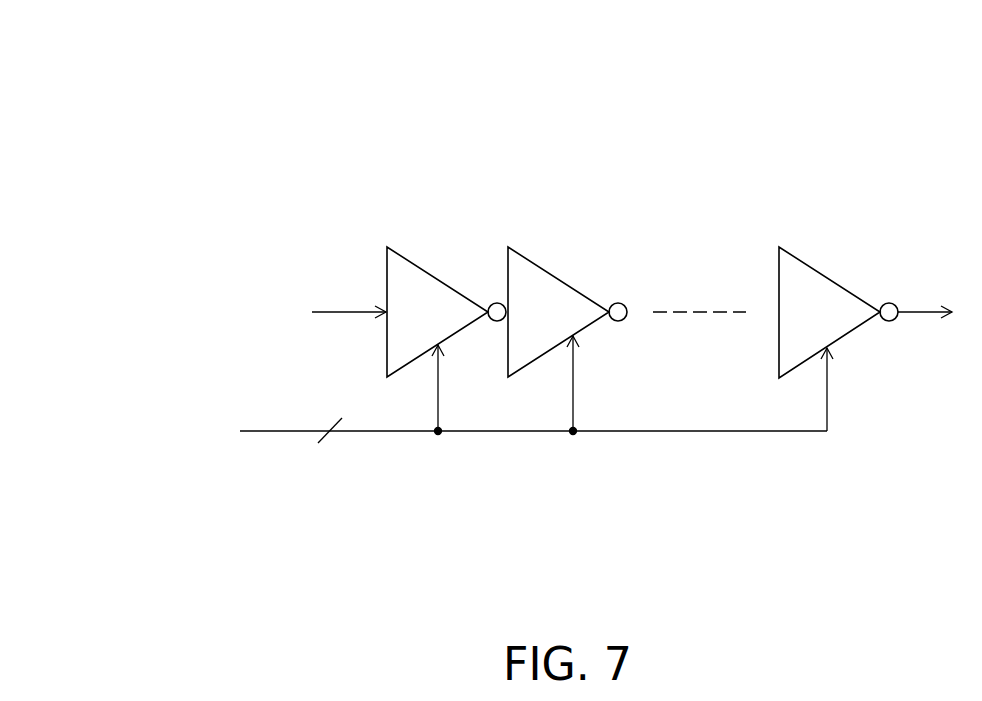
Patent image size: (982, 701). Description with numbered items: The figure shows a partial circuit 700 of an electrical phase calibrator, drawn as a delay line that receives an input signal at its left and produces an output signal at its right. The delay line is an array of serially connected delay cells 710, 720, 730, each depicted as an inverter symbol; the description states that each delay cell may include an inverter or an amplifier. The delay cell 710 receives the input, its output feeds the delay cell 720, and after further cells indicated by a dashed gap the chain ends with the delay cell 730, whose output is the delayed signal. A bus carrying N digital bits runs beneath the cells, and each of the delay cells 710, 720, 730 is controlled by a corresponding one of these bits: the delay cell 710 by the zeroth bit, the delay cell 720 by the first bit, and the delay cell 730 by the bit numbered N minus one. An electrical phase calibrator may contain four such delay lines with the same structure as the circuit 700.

The partial circuit 700 is at (131, 50).
The delay cell 710 is at (442, 277).
The delay cell 720 is at (563, 277).
The delay cell 730 is at (832, 278).